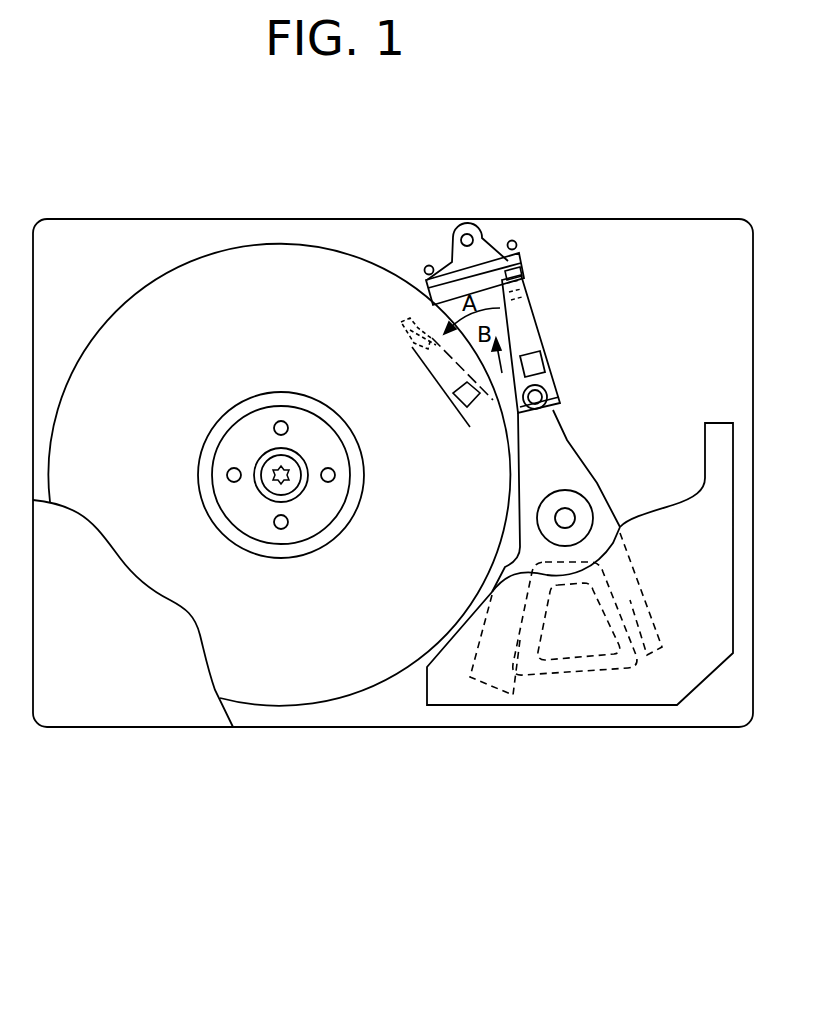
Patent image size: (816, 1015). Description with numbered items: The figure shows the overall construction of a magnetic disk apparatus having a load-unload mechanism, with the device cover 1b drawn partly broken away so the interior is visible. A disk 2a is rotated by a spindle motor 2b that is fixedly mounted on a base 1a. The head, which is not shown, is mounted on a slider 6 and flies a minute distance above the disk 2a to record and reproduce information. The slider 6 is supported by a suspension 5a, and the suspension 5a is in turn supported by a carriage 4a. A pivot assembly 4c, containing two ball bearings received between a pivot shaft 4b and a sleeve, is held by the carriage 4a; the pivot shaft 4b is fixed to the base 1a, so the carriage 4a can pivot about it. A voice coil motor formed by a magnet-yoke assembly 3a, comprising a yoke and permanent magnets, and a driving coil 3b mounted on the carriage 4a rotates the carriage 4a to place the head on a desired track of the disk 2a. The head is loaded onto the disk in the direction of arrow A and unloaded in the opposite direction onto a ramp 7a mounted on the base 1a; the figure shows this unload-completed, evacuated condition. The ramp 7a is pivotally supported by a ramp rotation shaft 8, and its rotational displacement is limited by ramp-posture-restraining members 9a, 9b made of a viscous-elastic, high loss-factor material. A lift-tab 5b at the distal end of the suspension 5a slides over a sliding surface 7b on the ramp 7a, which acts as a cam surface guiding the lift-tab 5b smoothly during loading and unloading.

The base 1a is at (260, 717).
The device cover 1b is at (158, 707).
The disk 2a is at (265, 292).
The spindle motor 2b is at (263, 497).
The magnet-yoke assembly 3a is at (718, 422).
The driving coil 3b is at (573, 683).
The carriage 4a is at (573, 453).
The pivot shaft 4b is at (565, 518).
The pivot assembly 4c is at (572, 498).
The suspension 5a is at (542, 342).
The lift-tab 5b is at (522, 267).
The slider 6 is at (522, 292).
The ramp 7a is at (477, 272).
The sliding surface 7b is at (487, 247).
The ramp rotation shaft 8 is at (465, 233).
The ramp-posture-restraining member 9a is at (427, 266).
The ramp-posture-restraining member 9b is at (515, 241).